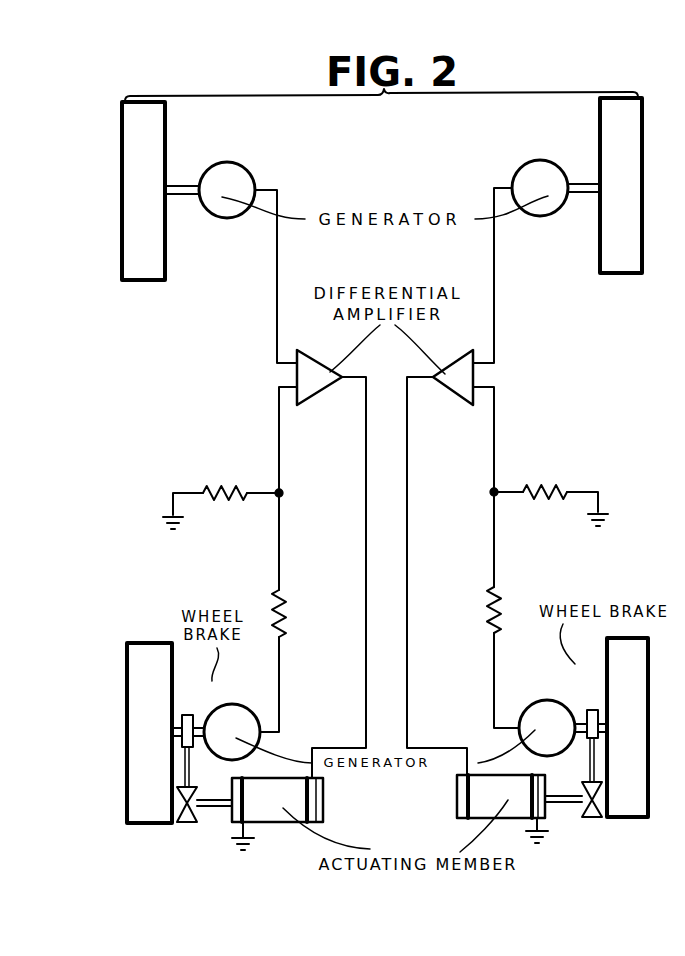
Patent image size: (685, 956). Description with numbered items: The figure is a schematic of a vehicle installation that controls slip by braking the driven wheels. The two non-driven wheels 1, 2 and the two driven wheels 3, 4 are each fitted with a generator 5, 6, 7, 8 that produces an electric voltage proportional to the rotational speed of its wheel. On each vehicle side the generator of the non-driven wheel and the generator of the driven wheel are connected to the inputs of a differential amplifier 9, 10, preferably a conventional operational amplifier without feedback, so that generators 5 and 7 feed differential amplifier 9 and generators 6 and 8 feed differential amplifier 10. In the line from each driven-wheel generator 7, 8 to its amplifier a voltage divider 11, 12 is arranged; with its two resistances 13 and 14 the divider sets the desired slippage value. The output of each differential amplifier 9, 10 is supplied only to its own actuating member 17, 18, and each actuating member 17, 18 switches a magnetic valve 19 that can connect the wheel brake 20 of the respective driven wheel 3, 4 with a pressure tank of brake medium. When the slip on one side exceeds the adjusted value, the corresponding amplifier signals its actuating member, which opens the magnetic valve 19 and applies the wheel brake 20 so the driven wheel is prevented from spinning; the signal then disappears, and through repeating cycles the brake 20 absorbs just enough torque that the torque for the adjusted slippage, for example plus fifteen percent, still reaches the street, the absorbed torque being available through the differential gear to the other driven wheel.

The non-driven wheel 1 is at (122, 128).
The non-driven wheel 2 is at (600, 125).
The driven wheel 3 is at (127, 670).
The driven wheel 4 is at (607, 665).
The generator 5 is at (240, 170).
The generator 6 is at (520, 172).
The generator 7 is at (231, 705).
The generator 8 is at (546, 702).
The differential amplifier 9 is at (318, 364).
The differential amplifier 10 is at (449, 364).
The voltage divider 11 is at (261, 527).
The voltage divider 12 is at (517, 521).
The resistance 13 is at (285, 619).
The resistance 14 is at (213, 490).
The actuating member 17 is at (319, 810).
The actuating member 18 is at (457, 806).
The magnetic valve 19 is at (193, 806).
The wheel brake 20 is at (187, 715).